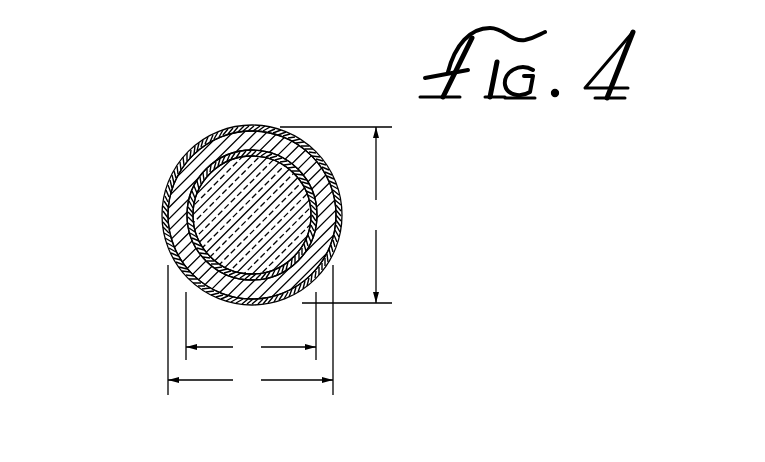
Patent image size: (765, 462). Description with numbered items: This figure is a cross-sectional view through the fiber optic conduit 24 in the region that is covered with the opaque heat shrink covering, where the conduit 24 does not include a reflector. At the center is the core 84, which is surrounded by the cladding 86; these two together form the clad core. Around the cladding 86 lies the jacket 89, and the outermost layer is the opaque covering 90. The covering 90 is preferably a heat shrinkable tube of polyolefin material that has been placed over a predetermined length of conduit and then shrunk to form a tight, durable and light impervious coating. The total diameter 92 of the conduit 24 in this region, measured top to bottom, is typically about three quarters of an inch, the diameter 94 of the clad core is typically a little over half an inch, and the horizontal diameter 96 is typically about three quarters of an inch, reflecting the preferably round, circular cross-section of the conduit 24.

The conduit 24 is at (124, 248).
The core 84 is at (212, 196).
The cladding 86 is at (212, 160).
The jacket 89 is at (173, 207).
The opaque covering 90 is at (255, 127).
The total diameter 92 is at (338, 215).
The diameter of the clad core 94 is at (251, 327).
The horizontal diameter 96 is at (250, 330).